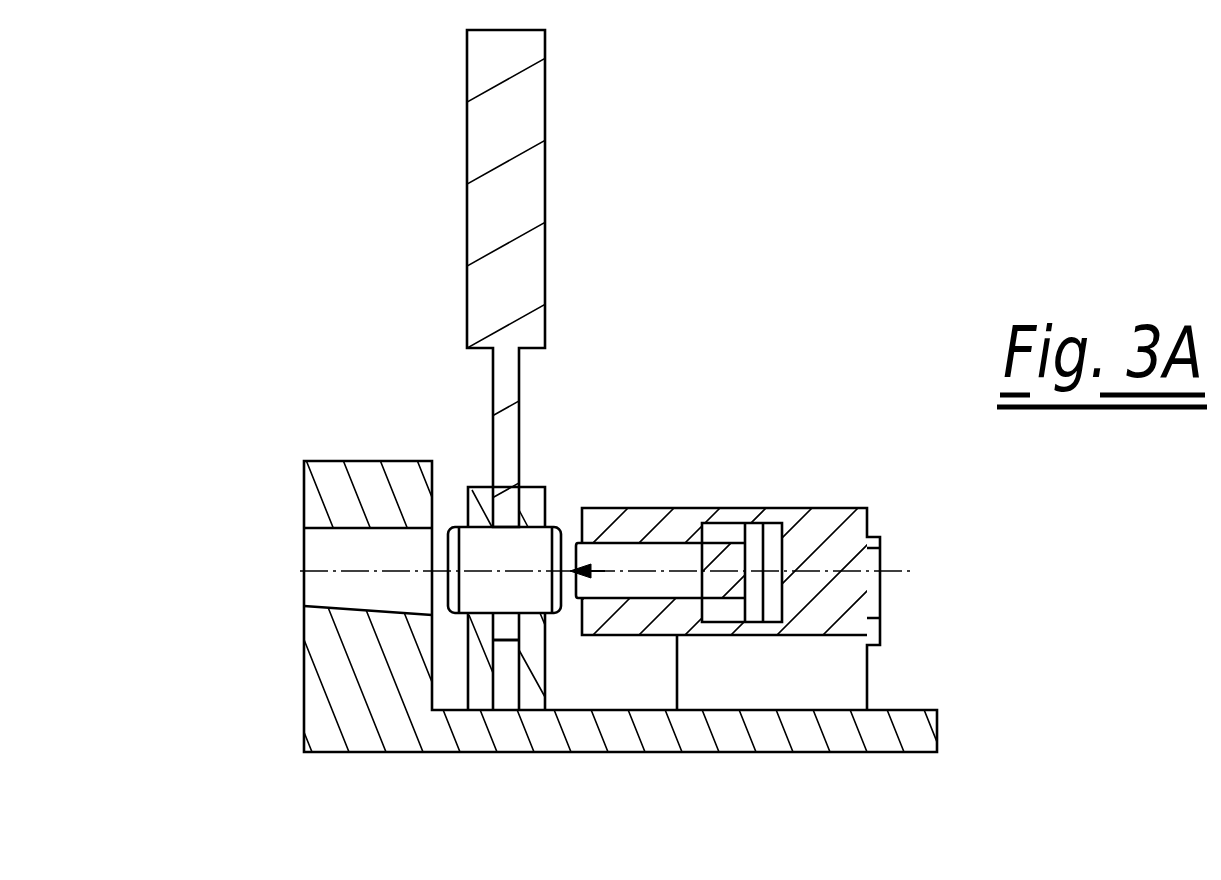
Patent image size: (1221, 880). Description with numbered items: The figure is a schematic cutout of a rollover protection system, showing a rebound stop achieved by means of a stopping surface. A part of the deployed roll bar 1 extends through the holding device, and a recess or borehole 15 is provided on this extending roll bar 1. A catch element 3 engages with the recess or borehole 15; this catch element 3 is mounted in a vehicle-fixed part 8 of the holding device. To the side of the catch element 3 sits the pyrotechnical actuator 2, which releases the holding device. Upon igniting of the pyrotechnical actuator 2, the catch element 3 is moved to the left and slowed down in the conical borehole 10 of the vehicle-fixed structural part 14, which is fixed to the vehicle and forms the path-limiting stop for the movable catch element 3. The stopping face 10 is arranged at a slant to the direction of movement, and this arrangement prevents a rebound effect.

The roll bar 1 is at (530, 197).
The pyrotechnical actuator 2 is at (712, 509).
The catch element 3 is at (545, 537).
The vehicle-fixed part of the holding device 8 is at (477, 490).
The conical borehole 10 is at (337, 529).
The vehicle-fixed structural part 14 is at (305, 713).
The recess or borehole 15 is at (505, 627).